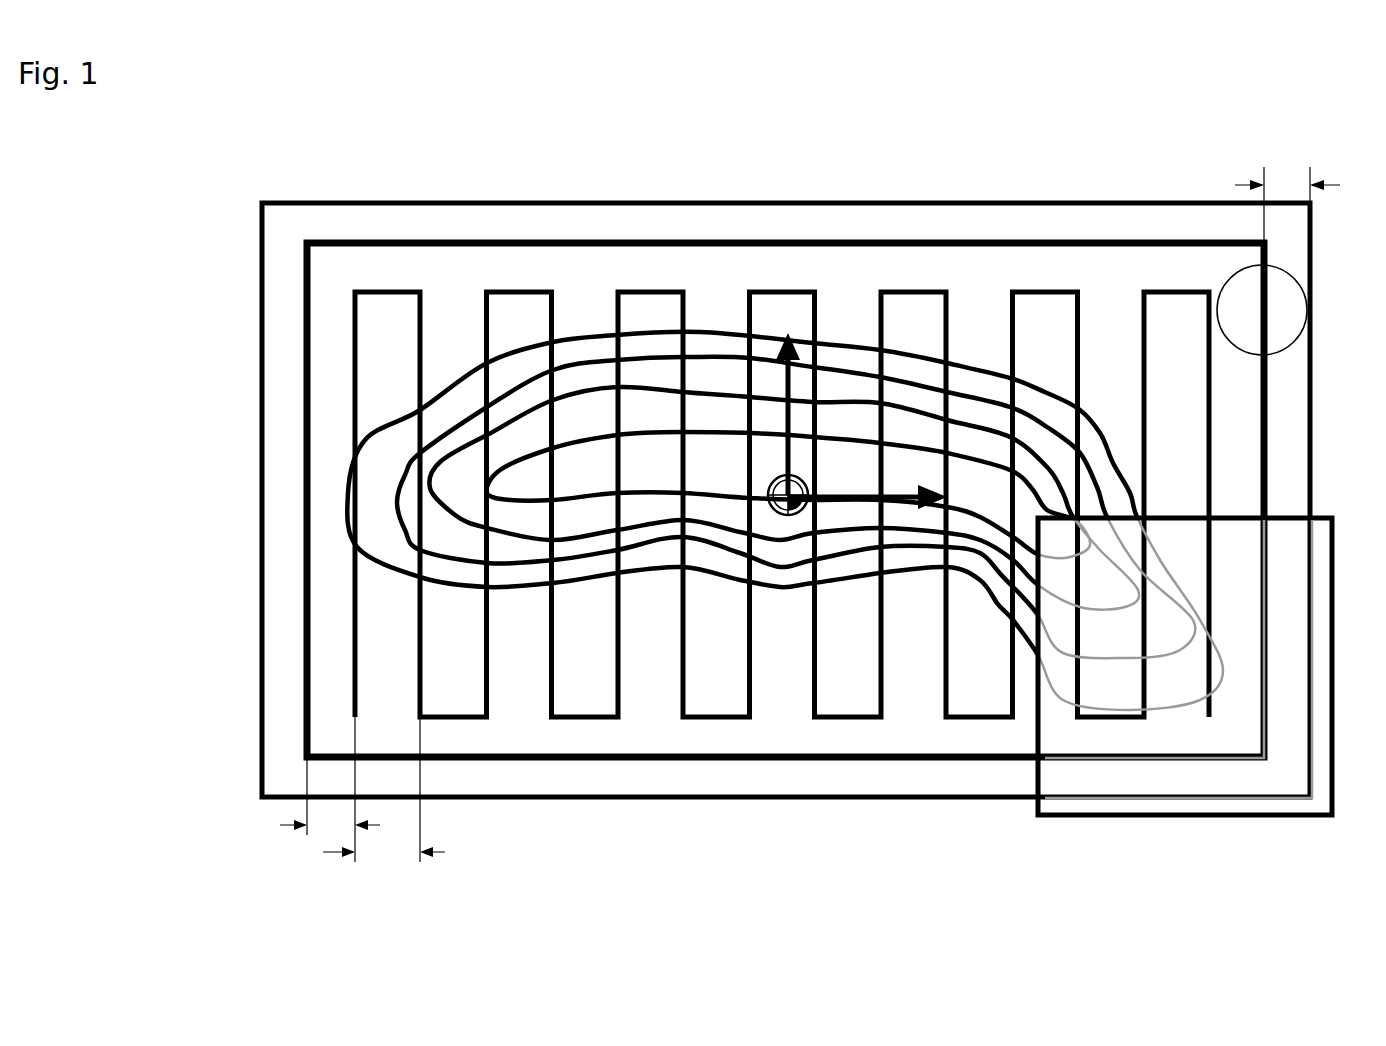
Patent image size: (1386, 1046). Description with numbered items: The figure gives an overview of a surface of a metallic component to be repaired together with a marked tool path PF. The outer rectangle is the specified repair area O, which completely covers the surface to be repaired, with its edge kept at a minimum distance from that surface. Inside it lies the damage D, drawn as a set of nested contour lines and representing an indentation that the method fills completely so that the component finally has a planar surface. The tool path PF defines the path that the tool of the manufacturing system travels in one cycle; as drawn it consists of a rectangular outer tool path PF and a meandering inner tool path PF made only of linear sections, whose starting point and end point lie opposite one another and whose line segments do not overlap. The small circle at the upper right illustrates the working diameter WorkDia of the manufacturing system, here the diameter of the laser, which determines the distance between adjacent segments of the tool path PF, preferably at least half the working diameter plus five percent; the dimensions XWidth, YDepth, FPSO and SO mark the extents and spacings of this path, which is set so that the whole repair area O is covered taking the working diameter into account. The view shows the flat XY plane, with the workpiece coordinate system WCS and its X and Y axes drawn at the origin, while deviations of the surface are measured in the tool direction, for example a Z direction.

The repair area O is at (978, 203).
The tool path PF is at (503, 233).
The damage D is at (617, 465).
The workpiece coordinate system origin WCS is at (873, 406).
The X axis X is at (883, 498).
The Y axis Y is at (788, 396).
The working diameter WorkDia is at (1290, 316).
The width in X direction XWidth is at (798, 177).
The depth in Y direction YDepth is at (239, 469).
The first pass step-over FPSO is at (280, 789).
The step-over SO is at (408, 794).